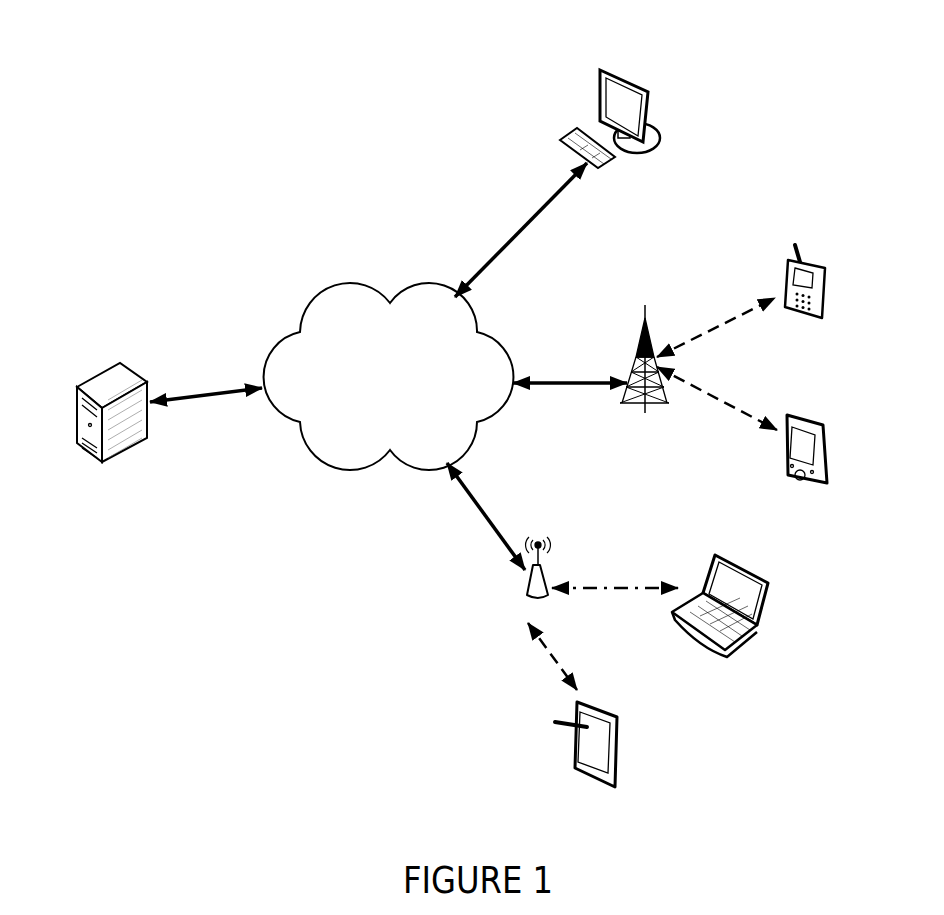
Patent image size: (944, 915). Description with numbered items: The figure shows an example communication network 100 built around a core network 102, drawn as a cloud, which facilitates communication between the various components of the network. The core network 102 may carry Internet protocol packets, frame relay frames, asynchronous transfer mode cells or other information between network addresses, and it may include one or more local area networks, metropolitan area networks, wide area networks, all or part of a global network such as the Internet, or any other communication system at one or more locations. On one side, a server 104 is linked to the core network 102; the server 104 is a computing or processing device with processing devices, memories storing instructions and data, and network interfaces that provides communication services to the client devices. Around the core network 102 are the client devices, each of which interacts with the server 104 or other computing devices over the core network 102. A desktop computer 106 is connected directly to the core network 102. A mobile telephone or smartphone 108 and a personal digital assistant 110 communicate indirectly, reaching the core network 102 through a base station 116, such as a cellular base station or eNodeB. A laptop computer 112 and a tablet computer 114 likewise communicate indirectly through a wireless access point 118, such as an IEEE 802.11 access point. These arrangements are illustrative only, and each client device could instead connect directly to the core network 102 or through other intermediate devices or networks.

The communication network 100 is at (231, 159).
The core network 102 is at (314, 302).
The server 104 is at (92, 376).
The desktop computer 106 is at (599, 73).
The mobile telephone or smartphone 108 is at (818, 272).
The personal digital assistant (PDA) 110 is at (818, 422).
The laptop computer 112 is at (773, 593).
The tablet computer 114 is at (620, 737).
The base station 116 is at (665, 403).
The wireless access point 118 is at (550, 577).